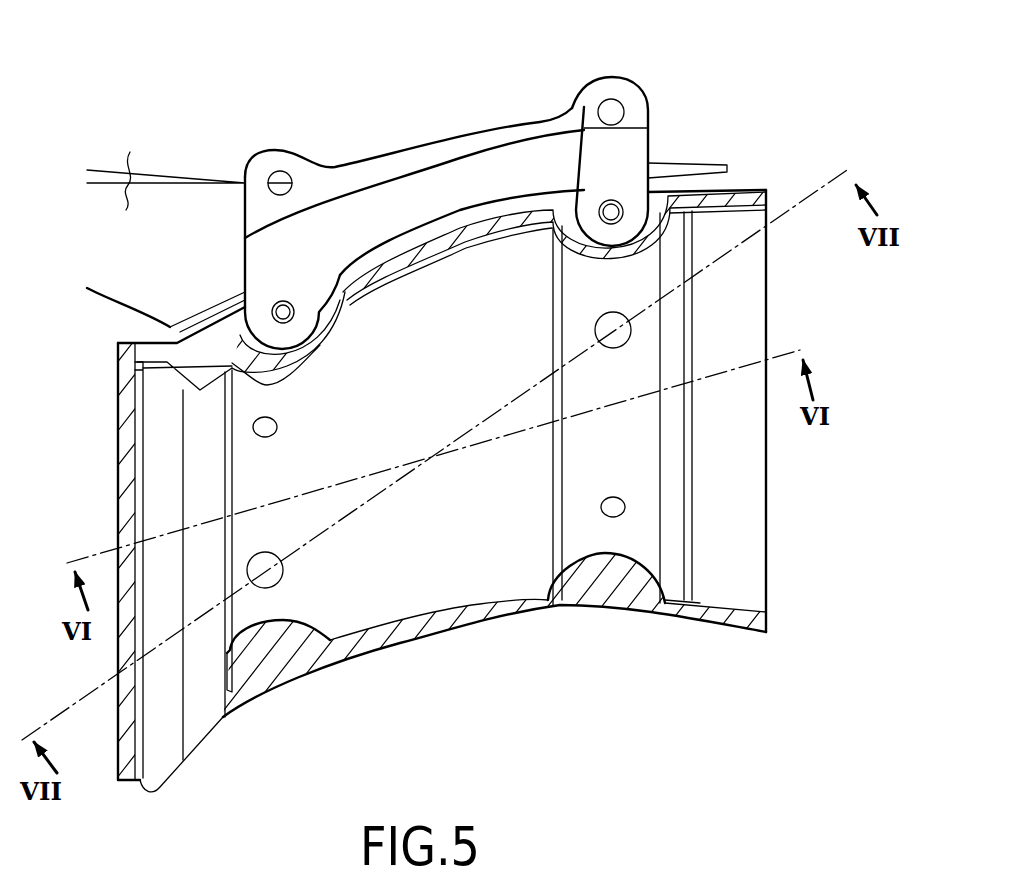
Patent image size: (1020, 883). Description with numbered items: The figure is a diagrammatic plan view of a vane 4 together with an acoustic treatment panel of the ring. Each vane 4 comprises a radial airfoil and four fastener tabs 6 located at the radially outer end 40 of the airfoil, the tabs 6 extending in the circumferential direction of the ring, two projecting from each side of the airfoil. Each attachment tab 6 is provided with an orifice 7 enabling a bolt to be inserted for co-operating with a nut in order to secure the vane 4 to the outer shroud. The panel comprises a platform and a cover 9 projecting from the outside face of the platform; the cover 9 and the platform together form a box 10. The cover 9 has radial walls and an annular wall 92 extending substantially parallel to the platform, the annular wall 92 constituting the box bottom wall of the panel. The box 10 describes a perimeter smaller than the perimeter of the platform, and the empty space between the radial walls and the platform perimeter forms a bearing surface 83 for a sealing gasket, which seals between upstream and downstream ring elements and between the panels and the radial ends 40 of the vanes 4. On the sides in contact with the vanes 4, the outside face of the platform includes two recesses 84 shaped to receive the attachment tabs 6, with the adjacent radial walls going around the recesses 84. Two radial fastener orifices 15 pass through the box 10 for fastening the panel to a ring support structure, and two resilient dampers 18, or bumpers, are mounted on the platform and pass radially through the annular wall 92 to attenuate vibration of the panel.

The vane 4 is at (166, 227).
The fastener tab 6 is at (278, 158).
The orifice 7 is at (326, 285).
The cover 9 is at (732, 300).
The box 10 is at (742, 263).
The radial fastener orifice 15 is at (265, 565).
The resilient damper 18 is at (268, 420).
The radially outer end 40 is at (432, 136).
The bearing surface 83 is at (695, 163).
The recess 84 is at (282, 632).
The annular wall 92 is at (577, 345).